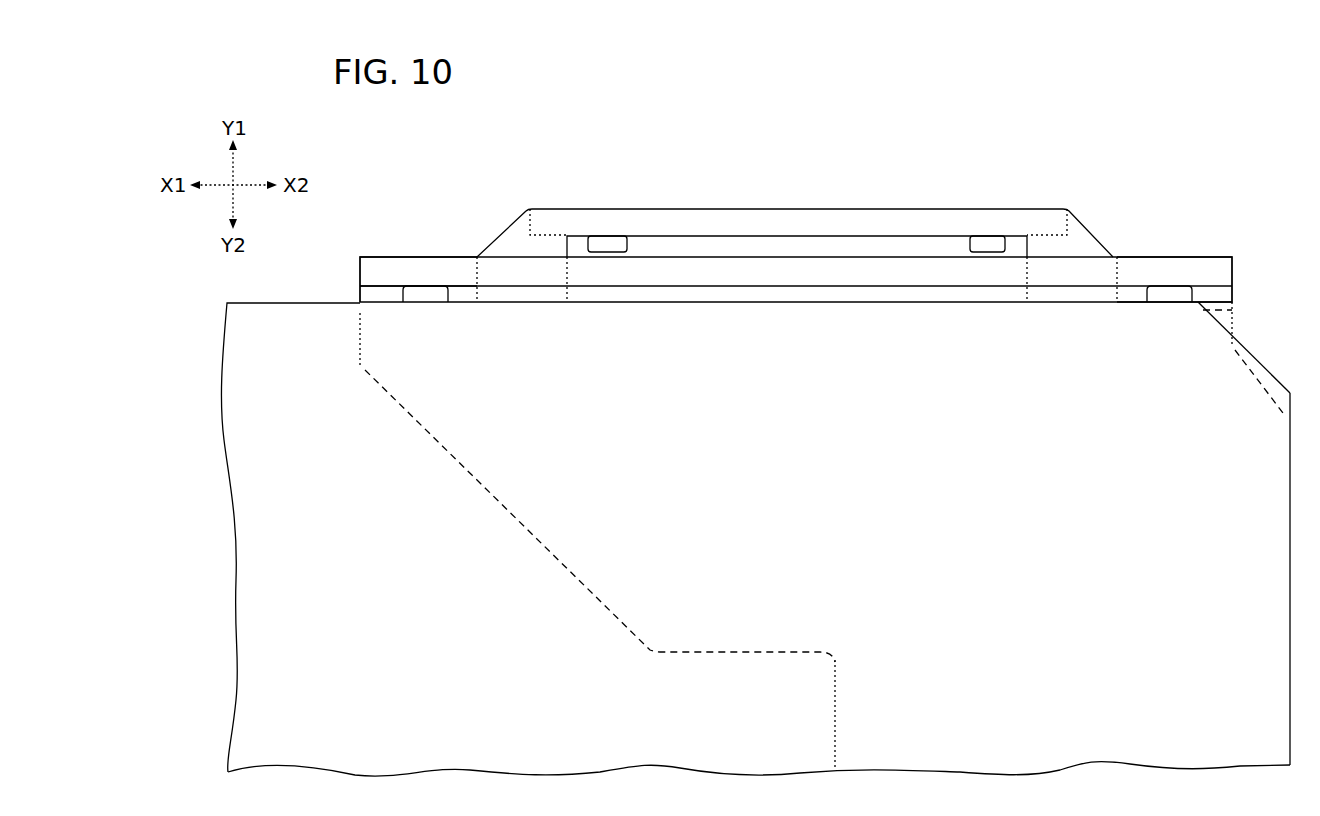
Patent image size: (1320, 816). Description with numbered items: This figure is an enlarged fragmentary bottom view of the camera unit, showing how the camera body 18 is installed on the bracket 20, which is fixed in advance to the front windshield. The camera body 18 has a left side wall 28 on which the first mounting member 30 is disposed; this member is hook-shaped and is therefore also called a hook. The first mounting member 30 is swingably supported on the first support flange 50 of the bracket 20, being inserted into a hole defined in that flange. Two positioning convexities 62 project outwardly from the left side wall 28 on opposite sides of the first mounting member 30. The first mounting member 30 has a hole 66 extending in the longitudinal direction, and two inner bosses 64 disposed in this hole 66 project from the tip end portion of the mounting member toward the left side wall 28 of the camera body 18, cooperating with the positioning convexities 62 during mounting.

The camera body 18 is at (288, 303).
The bracket 20 is at (1217, 253).
The first support flange 50 is at (1211, 243).
The left side wall 28 is at (397, 257).
The first mounting member 30 is at (875, 209).
The positioning convexities 62 is at (432, 293).
The inner bosses 64 is at (608, 240).
The hole 66 is at (665, 247).